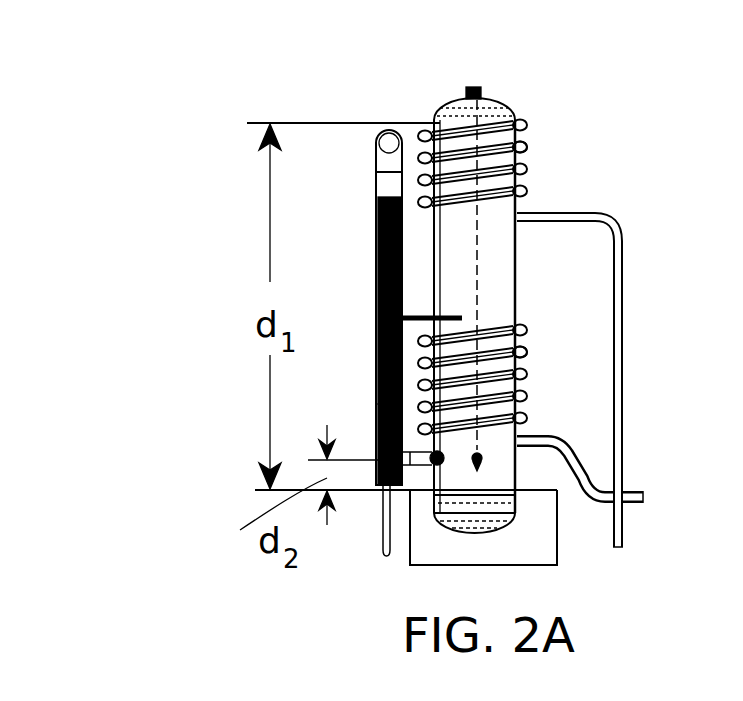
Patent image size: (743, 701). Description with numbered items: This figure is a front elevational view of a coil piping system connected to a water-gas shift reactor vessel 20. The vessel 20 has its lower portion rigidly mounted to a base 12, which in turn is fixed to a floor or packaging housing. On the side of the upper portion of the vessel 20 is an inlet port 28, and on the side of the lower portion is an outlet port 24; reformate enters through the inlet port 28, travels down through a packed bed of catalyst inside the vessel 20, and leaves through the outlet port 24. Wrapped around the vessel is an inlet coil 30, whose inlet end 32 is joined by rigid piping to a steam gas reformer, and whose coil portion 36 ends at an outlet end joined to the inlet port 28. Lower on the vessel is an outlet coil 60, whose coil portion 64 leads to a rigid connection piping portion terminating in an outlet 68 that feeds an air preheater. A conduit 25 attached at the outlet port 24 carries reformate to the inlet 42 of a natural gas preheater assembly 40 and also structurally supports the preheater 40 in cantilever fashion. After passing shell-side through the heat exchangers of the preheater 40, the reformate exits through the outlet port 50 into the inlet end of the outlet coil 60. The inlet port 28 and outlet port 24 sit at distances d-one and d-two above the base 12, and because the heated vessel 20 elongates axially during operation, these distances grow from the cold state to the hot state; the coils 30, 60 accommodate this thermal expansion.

The base 12 is at (542, 543).
The water-gas shift reactor vessel 20 is at (457, 262).
The outlet port 24 is at (430, 470).
The conduit 25 is at (378, 408).
The inlet port 28 is at (490, 103).
The inlet coil 30 is at (556, 163).
The inlet end 32 is at (620, 548).
The coil portion 36 is at (523, 148).
The natural gas preheater assembly 40 is at (376, 215).
The inlet 42 is at (383, 527).
The outlet port 50 is at (405, 314).
The outlet coil 60 is at (548, 383).
The coil portion 64 is at (523, 352).
The outlet 68 is at (645, 492).